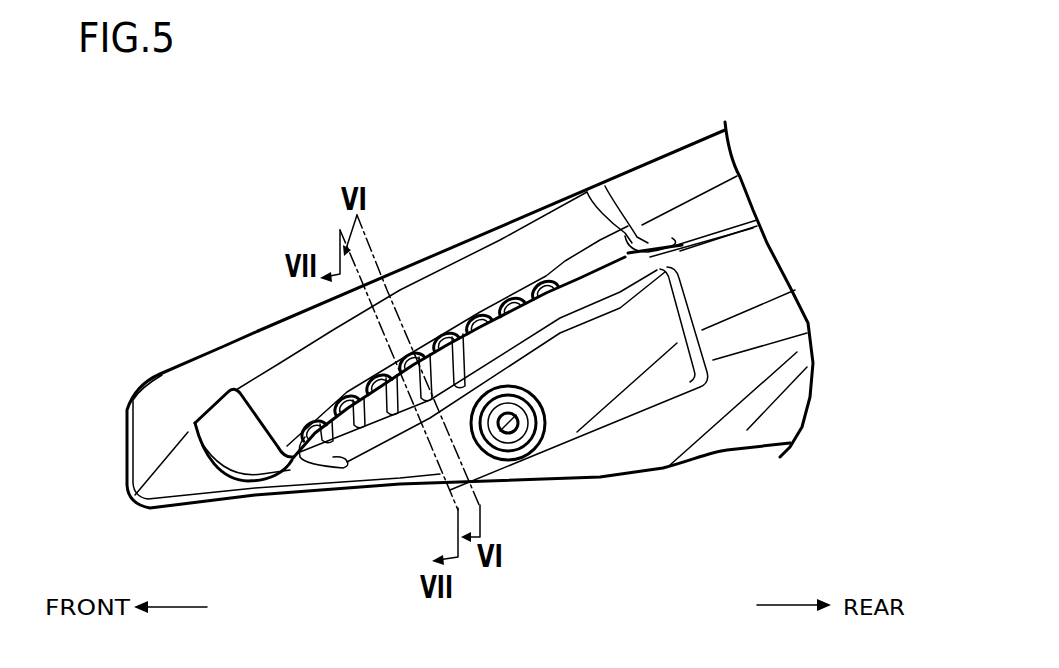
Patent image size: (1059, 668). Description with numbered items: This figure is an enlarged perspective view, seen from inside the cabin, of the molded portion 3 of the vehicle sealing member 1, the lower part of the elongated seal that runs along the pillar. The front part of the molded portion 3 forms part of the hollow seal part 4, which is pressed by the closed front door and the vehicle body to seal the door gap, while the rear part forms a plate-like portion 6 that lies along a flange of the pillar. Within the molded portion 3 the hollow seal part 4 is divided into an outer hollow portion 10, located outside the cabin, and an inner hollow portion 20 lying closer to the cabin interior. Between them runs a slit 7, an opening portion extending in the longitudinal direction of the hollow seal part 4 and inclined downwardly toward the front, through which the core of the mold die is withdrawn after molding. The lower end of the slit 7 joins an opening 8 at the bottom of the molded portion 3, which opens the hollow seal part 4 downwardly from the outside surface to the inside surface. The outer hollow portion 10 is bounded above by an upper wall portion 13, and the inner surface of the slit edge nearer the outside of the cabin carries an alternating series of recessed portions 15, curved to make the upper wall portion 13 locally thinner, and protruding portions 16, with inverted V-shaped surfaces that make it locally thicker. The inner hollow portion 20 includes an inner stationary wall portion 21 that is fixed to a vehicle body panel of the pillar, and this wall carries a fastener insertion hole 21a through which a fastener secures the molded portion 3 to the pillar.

The sealing member 1 is at (644, 164).
The molded portion 3 is at (703, 157).
The hollow seal part 4 is at (290, 383).
The plate-like portion 6 is at (728, 448).
The slit 7 is at (443, 327).
The opening 8 is at (258, 458).
The outer hollow portion 10 is at (500, 263).
The upper wall portion 13 is at (560, 227).
The recessed portion 15 is at (330, 445).
The protruding portion 16 is at (322, 455).
The inner hollow portion 20 is at (562, 390).
The stationary wall portion 21 is at (413, 458).
The fastener insertion hole 21a is at (513, 433).